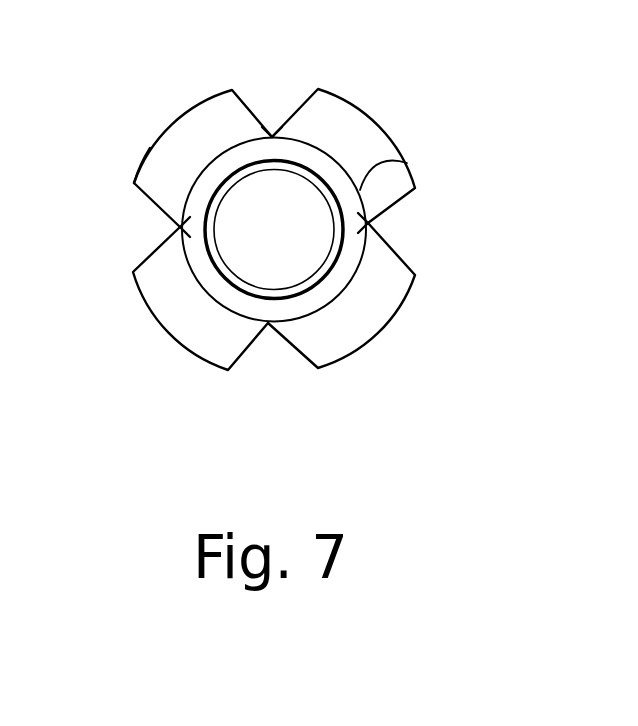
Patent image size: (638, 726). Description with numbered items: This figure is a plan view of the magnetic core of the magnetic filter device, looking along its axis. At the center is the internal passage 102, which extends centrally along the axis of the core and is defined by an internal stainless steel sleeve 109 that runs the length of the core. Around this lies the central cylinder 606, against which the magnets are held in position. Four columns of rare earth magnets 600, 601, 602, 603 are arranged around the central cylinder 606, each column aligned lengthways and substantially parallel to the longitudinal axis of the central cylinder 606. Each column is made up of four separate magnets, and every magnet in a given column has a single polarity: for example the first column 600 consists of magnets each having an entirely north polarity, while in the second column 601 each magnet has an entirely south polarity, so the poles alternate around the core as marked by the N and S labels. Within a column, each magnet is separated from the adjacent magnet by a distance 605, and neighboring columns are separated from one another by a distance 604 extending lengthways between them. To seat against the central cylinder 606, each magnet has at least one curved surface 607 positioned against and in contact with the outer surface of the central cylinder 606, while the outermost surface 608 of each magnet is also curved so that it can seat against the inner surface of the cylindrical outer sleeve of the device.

The internal passage 102 is at (253, 233).
The internal stainless steel sleeve 109 is at (180, 228).
The first column of rare earth magnets 600 is at (212, 347).
The second column of rare earth magnets 601 is at (340, 338).
The column of rare earth magnets 602 is at (328, 115).
The column of rare earth magnets 603 is at (225, 110).
The distance between adjacent columns 604 is at (272, 108).
The distance between adjacent magnets in a column 605 is at (30, 6).
The central cylinder 606 is at (360, 232).
The curved surface of magnet 607 is at (407, 163).
The outermost surface of magnet 608 is at (140, 157).